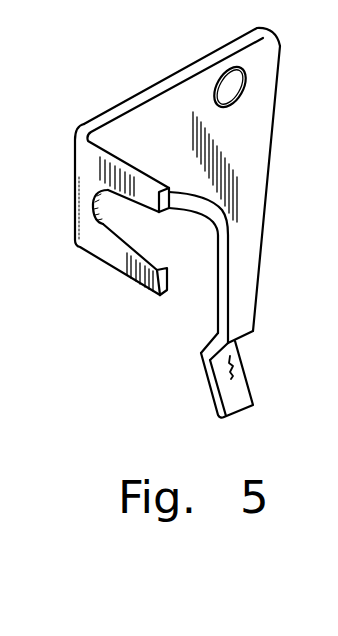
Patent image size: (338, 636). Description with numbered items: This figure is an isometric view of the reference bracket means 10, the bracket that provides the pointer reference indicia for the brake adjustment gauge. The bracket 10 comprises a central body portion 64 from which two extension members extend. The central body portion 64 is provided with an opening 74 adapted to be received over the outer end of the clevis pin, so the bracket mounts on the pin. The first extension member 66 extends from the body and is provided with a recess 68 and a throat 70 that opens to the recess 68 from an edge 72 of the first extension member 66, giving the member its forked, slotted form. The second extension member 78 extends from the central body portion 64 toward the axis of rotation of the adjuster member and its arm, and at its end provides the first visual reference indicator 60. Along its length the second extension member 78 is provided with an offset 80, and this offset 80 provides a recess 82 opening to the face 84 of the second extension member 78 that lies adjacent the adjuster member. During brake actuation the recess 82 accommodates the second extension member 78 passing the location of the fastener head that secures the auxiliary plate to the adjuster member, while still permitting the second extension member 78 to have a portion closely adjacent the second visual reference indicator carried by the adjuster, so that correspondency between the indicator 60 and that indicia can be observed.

The reference bracket means 10 is at (279, 125).
The central body portion 64 is at (147, 117).
The opening 74 is at (228, 84).
The first extension member 66 is at (111, 209).
The recess 68 is at (107, 210).
The throat 70 is at (150, 236).
The edge 72 is at (163, 290).
The second extension member 78 is at (245, 244).
The offset 80 is at (201, 363).
The face 84 is at (245, 305).
The first visual reference indicator 60 is at (239, 394).
The recess 82 is at (234, 360).